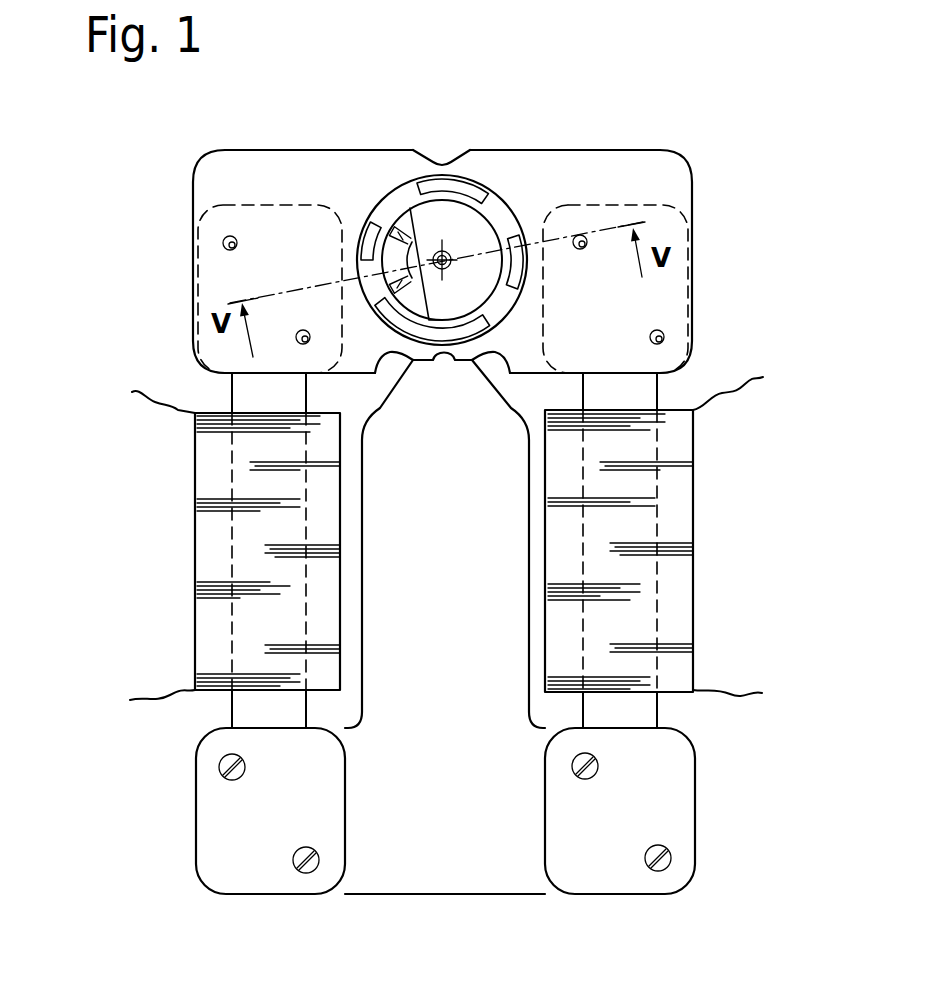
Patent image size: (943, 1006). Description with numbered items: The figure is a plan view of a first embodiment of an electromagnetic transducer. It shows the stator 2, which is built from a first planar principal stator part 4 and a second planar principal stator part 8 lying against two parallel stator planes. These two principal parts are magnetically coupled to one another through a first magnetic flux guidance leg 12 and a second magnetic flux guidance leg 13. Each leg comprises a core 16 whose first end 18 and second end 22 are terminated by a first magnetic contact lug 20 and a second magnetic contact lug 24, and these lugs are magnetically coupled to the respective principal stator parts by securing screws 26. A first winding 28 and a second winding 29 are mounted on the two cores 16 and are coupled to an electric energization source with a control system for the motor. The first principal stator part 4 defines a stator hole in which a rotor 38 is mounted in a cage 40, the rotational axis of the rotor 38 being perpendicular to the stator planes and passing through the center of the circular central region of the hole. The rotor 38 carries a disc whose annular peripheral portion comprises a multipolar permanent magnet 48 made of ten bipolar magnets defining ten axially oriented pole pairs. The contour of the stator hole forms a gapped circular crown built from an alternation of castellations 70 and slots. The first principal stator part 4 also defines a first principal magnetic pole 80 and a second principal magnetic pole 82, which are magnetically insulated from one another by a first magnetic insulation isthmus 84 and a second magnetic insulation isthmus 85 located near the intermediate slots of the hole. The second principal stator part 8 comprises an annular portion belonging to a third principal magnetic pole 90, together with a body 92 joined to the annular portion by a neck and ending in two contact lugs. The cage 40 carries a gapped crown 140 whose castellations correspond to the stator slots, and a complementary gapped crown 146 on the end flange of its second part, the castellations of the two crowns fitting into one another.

The stator 2 is at (518, 128).
The first planar principal stator part 4 is at (205, 190).
The second planar principal stator part 8 is at (457, 858).
The first magnetic flux guidance leg 12 is at (255, 710).
The second magnetic flux guidance leg 13 is at (630, 705).
The core 16 is at (250, 552).
The first end 18 is at (214, 387).
The first magnetic contact lug 20 is at (237, 272).
The second end 22 is at (326, 712).
The second magnetic contact lug 24 is at (205, 833).
The securing screw 26 is at (660, 862).
The first winding 28 is at (210, 631).
The second winding 29 is at (673, 627).
The rotor 38 is at (387, 208).
The cage 40 is at (428, 227).
The multipolar permanent magnet 48 is at (366, 219).
The castellation 70 is at (393, 278).
The first principal magnetic pole 80 is at (285, 178).
The second principal magnetic pole 82 is at (558, 188).
The first magnetic insulation isthmus 84 is at (447, 150).
The second magnetic insulation isthmus 85 is at (446, 386).
The third principal magnetic pole 90 is at (398, 460).
The body 92 is at (440, 607).
The gapped crown 140 is at (345, 236).
The gapped crown 146 is at (518, 195).